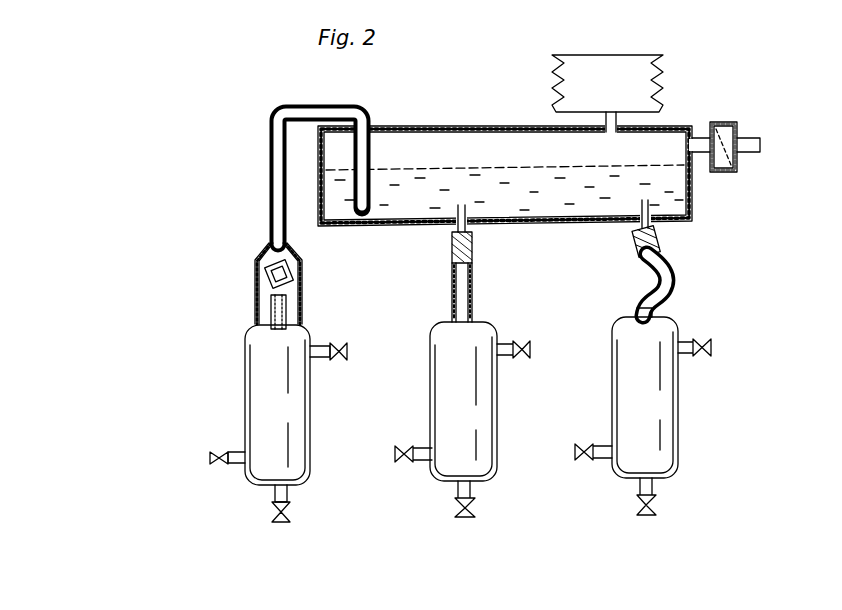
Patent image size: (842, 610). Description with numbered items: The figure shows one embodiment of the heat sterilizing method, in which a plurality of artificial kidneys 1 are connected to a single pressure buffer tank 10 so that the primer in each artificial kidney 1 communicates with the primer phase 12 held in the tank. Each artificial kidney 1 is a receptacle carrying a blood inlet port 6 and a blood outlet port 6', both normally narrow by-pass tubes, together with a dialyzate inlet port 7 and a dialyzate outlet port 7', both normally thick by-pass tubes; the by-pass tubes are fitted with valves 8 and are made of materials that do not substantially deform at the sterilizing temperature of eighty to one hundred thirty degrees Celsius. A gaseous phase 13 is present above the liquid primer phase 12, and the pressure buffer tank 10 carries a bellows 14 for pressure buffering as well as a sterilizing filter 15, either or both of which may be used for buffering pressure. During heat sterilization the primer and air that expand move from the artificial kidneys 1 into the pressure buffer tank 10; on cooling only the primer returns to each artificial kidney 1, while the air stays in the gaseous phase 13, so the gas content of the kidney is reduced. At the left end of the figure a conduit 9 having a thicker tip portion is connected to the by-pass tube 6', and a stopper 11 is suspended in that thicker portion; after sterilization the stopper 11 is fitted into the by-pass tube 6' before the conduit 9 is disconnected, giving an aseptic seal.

The artificial kidney 1 is at (312, 421).
The blood inlet port 6 is at (304, 503).
The blood outlet port 6' is at (243, 319).
The dialyzate inlet port 7 is at (327, 318).
The dialyzate outlet port 7' is at (230, 486).
The valve 8 is at (347, 351).
The conduit 9 is at (269, 180).
The pressure buffer tank 10 is at (436, 101).
The stopper 11 is at (262, 263).
The primer phase 12 is at (568, 203).
The gaseous phase 13 is at (483, 148).
The bellows 14 is at (647, 55).
The sterilizing filter 15 is at (727, 172).